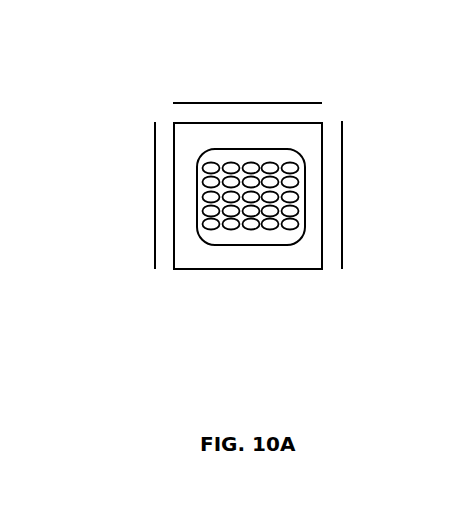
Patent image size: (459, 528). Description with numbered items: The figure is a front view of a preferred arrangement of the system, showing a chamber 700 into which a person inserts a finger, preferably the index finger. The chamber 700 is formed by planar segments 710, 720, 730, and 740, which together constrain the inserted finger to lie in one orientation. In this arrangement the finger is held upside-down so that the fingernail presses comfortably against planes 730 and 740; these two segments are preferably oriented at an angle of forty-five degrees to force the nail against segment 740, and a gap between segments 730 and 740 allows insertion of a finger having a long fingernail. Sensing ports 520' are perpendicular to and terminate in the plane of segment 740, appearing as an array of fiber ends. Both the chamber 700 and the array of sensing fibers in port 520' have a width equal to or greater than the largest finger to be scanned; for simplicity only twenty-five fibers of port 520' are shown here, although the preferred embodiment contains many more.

The chamber 700 is at (172, 118).
The planar segment 710 is at (155, 187).
The planar segment 720 is at (342, 184).
The planar segment 730 is at (245, 102).
The planar segment 740 is at (305, 253).
The sensing ports 520' is at (189, 268).